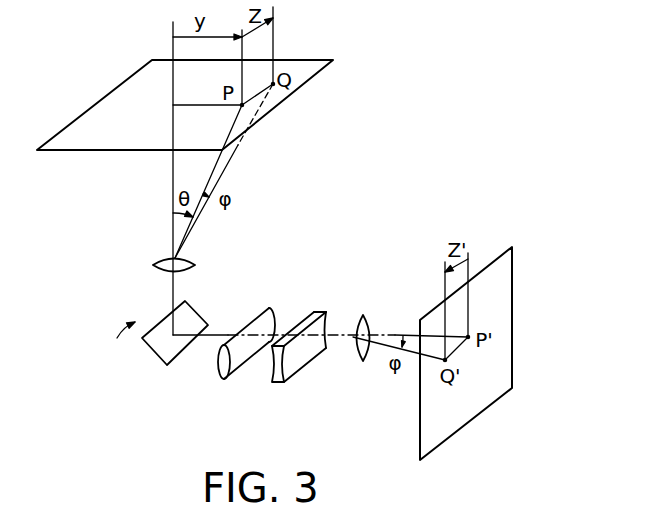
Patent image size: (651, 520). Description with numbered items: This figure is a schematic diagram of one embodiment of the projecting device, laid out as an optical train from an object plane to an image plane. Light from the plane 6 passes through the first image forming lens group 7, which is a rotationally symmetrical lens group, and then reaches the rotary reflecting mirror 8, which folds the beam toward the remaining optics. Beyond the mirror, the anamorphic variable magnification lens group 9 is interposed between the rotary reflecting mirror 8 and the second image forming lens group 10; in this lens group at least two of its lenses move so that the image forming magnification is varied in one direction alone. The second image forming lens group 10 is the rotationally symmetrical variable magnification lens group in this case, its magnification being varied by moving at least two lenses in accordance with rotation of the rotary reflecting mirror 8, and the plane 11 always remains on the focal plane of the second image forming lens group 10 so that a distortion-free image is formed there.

The plane 6 is at (307, 63).
The first image forming lens group 7 is at (192, 260).
The rotary reflecting mirror 8 is at (165, 352).
The anamorphic variable magnification lens group 9 is at (292, 385).
The second image forming lens group 10 is at (358, 352).
The plane 11 is at (508, 360).